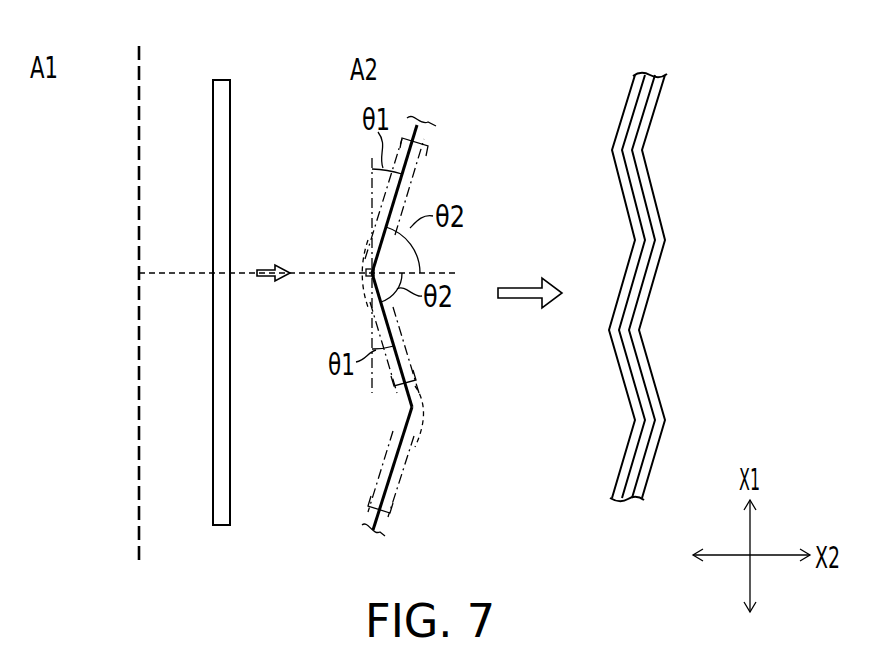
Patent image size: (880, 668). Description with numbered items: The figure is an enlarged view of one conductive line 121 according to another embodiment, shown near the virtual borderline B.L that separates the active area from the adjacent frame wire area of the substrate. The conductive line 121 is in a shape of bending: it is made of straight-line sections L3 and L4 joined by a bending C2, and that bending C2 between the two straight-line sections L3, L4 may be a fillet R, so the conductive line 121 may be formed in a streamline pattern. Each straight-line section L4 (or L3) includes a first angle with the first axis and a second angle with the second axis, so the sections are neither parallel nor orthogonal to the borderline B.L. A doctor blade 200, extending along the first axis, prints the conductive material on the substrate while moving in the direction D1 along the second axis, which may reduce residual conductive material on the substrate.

The conductive line 121 is at (520, 168).
The doctor blade 200 is at (222, 525).
The straight-line section L3 is at (419, 171).
The straight-line section L4 is at (405, 345).
The bending C2 is at (364, 253).
The fillet R is at (378, 270).
The printing direction D1 is at (265, 266).
The virtual borderline B.L is at (139, 286).